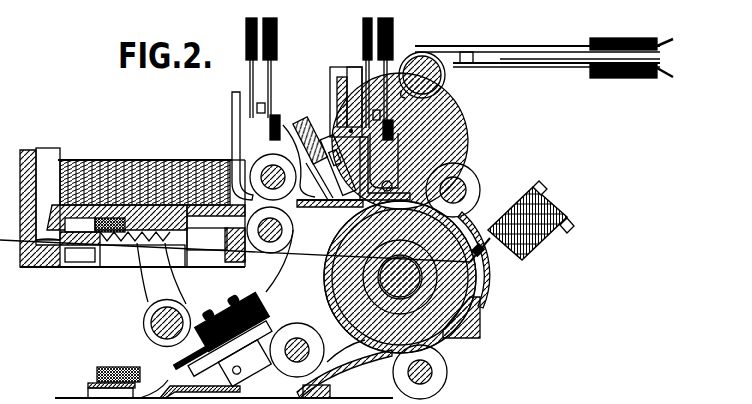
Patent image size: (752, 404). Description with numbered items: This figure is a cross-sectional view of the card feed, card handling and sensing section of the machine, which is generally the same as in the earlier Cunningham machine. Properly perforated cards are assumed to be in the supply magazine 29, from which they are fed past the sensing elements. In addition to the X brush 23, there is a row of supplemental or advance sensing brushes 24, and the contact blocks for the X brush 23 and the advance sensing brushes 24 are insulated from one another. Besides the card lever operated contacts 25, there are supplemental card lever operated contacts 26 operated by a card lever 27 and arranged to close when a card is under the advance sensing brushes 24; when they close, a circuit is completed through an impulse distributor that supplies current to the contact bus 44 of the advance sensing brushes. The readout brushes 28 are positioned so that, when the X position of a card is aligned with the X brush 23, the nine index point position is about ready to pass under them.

The X brush 23 is at (346, 222).
The advance sensing brushes 24 is at (300, 208).
The card lever operated contacts 25 is at (377, 110).
The supplemental card lever operated contacts 26 is at (261, 101).
The card lever 27 is at (317, 133).
The readout brushes 28 is at (483, 260).
The supply magazine 29 is at (137, 157).
The contact bus 44 is at (292, 262).